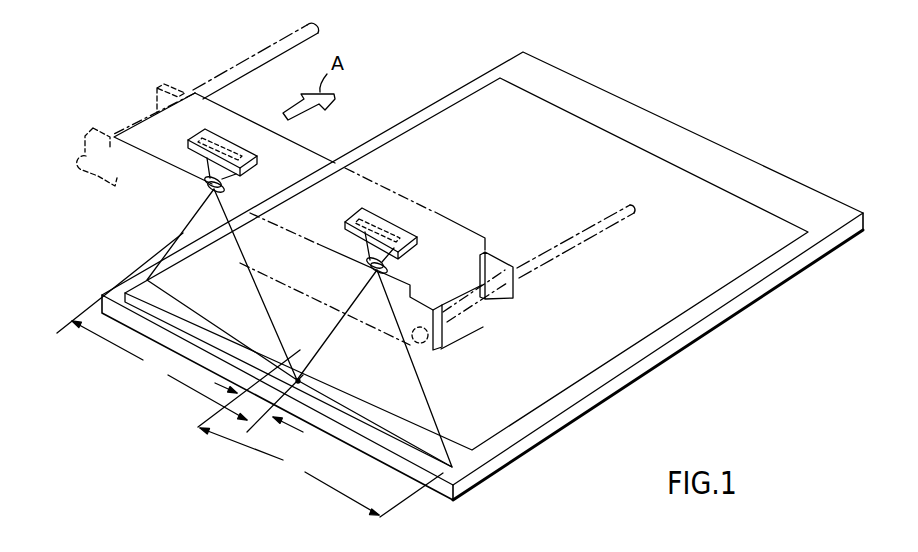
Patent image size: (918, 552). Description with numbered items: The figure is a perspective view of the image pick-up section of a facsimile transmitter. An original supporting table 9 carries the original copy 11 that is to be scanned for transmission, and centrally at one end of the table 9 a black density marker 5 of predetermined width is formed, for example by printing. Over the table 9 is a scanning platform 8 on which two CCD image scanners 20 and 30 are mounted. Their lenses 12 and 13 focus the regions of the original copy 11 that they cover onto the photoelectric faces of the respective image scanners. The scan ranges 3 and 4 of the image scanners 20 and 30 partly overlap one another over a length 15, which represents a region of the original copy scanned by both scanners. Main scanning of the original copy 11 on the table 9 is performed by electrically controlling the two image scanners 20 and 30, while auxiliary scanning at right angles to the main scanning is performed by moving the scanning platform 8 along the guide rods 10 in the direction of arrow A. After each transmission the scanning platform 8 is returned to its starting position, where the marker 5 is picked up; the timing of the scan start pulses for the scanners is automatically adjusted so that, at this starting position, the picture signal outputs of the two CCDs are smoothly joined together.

The scan range 3 is at (152, 326).
The scan range 4 is at (321, 472).
The density marker 5 is at (303, 382).
The scanning platform 8 is at (320, 174).
The original supporting table 9 is at (607, 398).
The guide rods 10 is at (228, 72).
The original copy 11 is at (741, 227).
The lens 12 is at (206, 188).
The lens 13 is at (376, 276).
The overlap length 15 is at (250, 391).
The CCD image scanner 20 is at (188, 142).
The CCD image scanner 30 is at (352, 229).